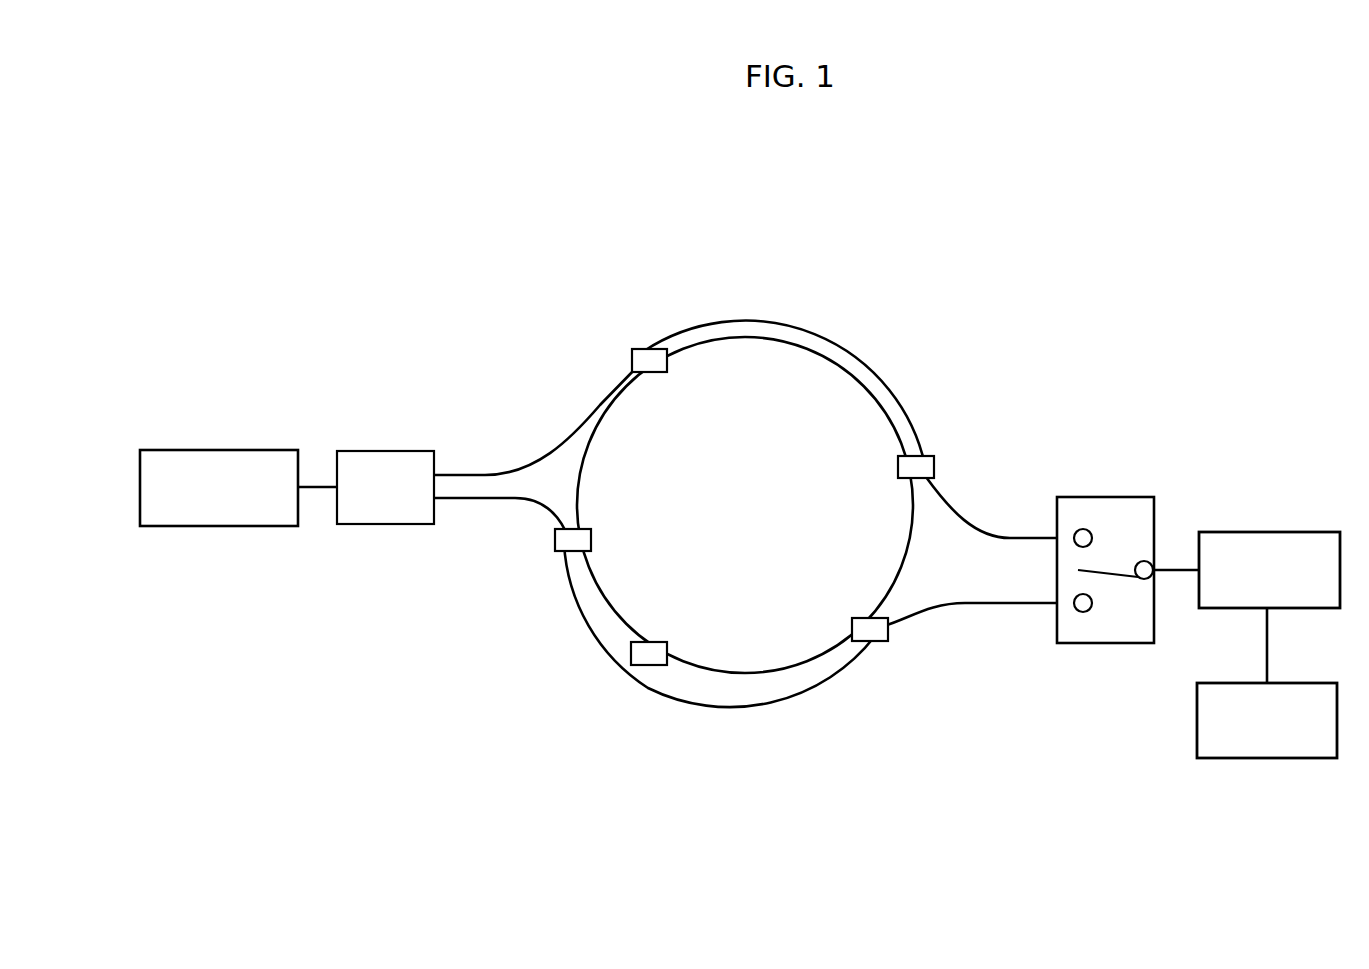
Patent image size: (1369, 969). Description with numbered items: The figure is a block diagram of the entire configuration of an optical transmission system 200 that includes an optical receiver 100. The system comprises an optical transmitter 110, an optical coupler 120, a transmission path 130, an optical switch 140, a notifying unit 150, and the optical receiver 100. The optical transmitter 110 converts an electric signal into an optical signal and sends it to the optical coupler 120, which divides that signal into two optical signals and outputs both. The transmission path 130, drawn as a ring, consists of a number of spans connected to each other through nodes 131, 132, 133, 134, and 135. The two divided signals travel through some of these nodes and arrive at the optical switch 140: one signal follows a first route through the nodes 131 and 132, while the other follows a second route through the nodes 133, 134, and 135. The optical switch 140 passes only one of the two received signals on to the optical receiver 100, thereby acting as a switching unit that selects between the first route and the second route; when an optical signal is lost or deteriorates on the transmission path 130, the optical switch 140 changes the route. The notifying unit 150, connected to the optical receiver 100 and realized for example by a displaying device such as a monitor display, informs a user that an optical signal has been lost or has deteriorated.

The optical receiver 100 is at (1273, 532).
The optical transmitter 110 is at (229, 450).
The optical coupler 120 is at (386, 451).
The transmission path 130 is at (891, 331).
The node 131 is at (637, 349).
The node 132 is at (930, 456).
The node 133 is at (555, 540).
The node 134 is at (641, 665).
The node 135 is at (876, 641).
The optical switch 140 is at (1133, 644).
The notifying unit 150 is at (1307, 683).
The optical transmission system 200 is at (1112, 208).